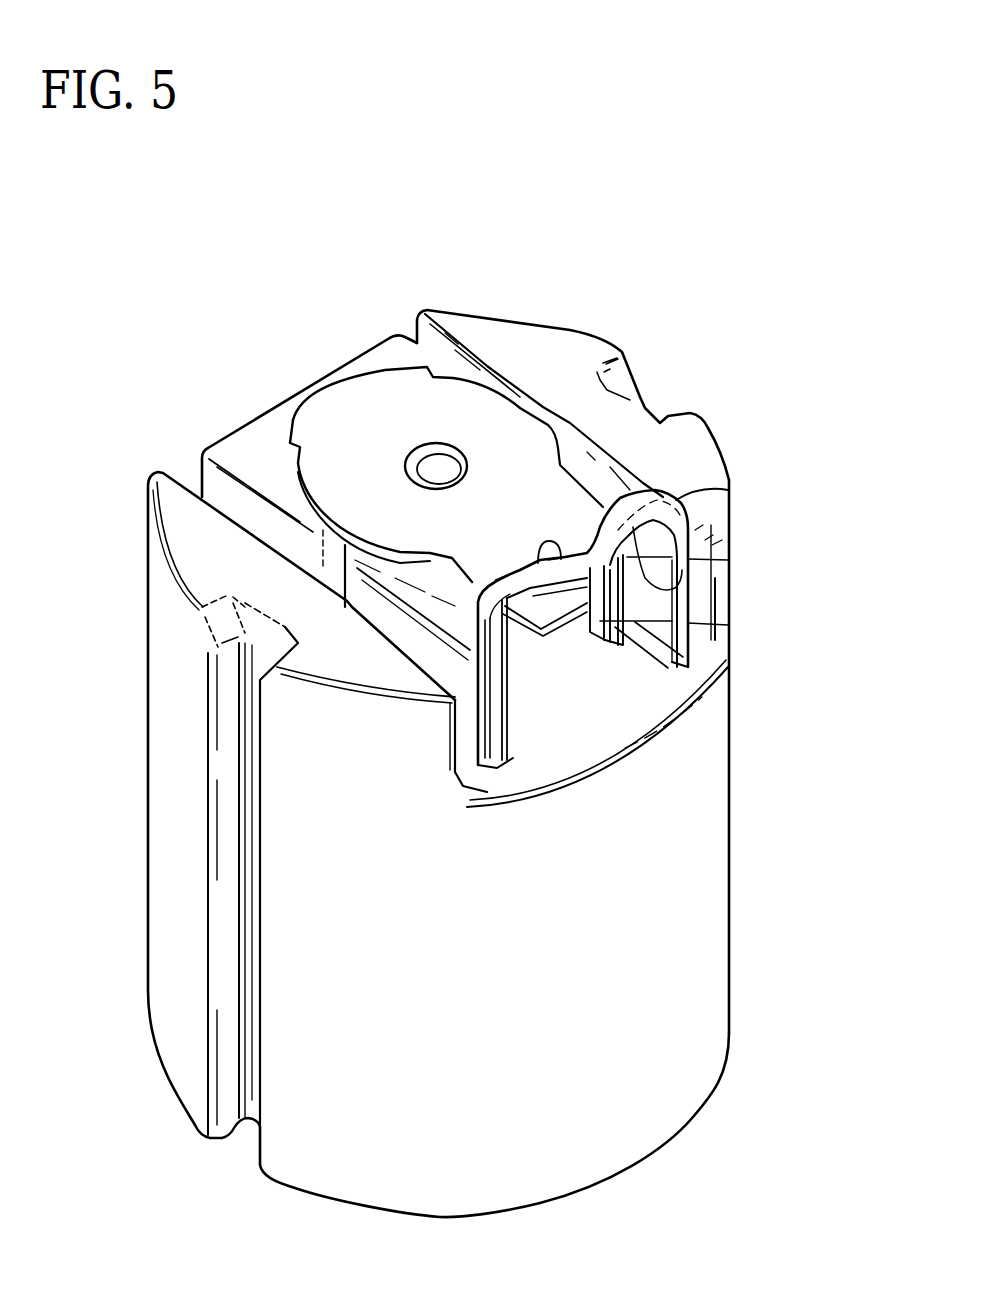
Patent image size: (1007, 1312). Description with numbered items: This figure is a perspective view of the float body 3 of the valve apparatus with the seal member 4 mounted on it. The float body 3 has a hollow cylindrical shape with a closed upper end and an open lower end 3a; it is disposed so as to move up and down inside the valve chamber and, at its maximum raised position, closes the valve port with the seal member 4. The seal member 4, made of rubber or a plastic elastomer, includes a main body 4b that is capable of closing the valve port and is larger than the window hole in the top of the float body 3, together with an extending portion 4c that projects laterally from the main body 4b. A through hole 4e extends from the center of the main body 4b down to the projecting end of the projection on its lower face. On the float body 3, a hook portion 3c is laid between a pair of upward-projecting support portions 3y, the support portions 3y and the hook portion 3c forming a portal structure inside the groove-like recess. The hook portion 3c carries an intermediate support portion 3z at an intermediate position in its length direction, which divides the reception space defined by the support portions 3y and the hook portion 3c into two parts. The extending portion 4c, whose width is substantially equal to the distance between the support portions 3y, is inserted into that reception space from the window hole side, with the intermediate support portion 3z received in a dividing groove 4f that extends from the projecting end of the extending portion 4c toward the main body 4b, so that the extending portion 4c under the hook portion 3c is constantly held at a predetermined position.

The float body 3 is at (668, 930).
The lower end 3a is at (640, 1163).
The support portions 3y is at (458, 630).
The intermediate support portion 3z is at (690, 668).
The hook portion 3c is at (640, 493).
The seal member 4 is at (467, 402).
The main body 4b is at (467, 402).
The through hole 4e is at (435, 468).
The extending portion 4c is at (640, 622).
The dividing groove 4f is at (600, 620).